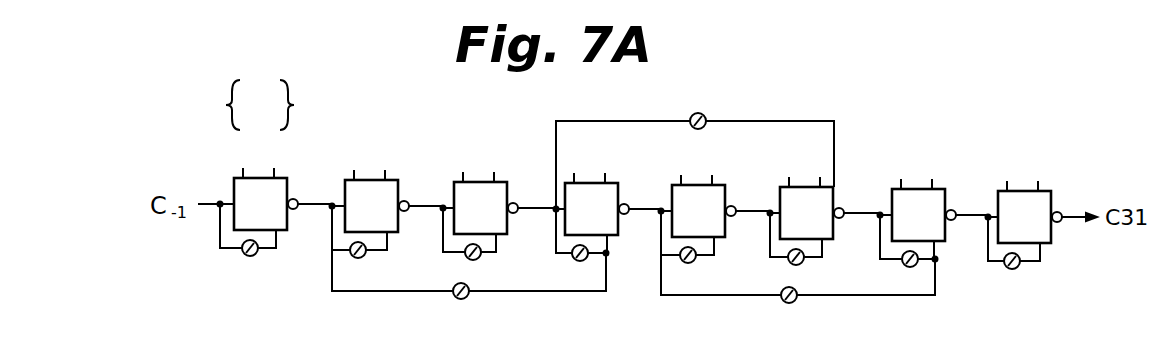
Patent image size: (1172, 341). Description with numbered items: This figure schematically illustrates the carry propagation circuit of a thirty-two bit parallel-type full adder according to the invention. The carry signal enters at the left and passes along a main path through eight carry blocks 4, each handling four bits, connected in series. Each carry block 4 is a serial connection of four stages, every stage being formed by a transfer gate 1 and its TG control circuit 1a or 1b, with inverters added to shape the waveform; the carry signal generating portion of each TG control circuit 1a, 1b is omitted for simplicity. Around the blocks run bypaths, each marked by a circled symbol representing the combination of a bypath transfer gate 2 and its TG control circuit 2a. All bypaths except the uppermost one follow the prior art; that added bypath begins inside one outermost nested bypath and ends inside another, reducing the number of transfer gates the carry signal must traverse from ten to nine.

The transfer gate 1 is at (655, 199).
The TG control circuit 1a is at (215, 105).
The TG control circuit 1b is at (303, 105).
The transfer gate 2 is at (640, 212).
The TG control circuit 2a is at (789, 304).
The 4-bit adder unit 4 is at (287, 184).